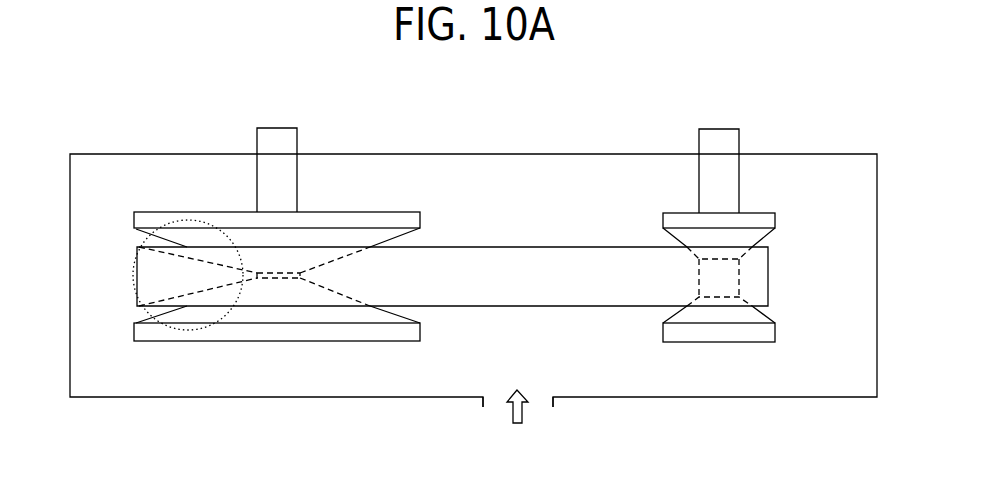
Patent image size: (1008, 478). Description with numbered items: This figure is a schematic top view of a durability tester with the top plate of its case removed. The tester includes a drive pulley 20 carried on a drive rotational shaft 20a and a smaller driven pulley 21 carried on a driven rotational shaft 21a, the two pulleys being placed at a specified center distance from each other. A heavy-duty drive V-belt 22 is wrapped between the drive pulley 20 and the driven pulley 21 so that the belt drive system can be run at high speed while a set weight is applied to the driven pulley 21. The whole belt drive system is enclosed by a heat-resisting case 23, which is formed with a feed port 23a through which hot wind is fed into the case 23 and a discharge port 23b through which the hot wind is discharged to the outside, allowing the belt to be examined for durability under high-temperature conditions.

The drive pulley 20 is at (420, 213).
The drive rotational shaft 20a is at (281, 127).
The driven pulley 21 is at (775, 213).
The driven rotational shaft 21a is at (718, 128).
The heavy-duty drive V-belt 22 is at (560, 247).
The heat-resisting case 23 is at (813, 154).
The feed port 23a is at (550, 403).
The discharge port 23b is at (178, 220).